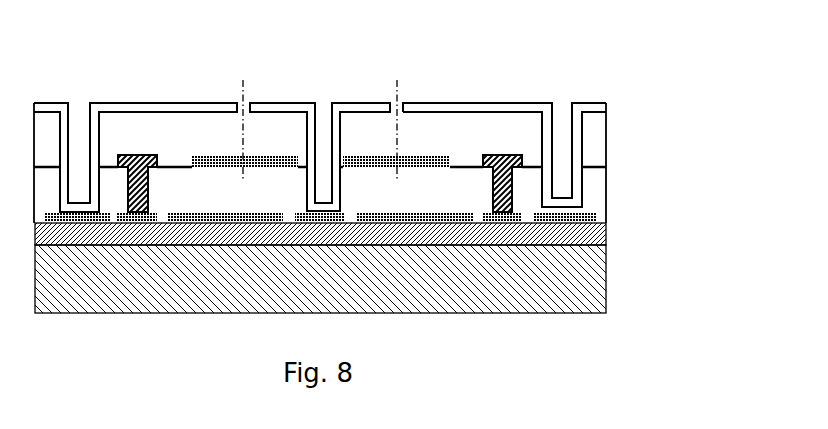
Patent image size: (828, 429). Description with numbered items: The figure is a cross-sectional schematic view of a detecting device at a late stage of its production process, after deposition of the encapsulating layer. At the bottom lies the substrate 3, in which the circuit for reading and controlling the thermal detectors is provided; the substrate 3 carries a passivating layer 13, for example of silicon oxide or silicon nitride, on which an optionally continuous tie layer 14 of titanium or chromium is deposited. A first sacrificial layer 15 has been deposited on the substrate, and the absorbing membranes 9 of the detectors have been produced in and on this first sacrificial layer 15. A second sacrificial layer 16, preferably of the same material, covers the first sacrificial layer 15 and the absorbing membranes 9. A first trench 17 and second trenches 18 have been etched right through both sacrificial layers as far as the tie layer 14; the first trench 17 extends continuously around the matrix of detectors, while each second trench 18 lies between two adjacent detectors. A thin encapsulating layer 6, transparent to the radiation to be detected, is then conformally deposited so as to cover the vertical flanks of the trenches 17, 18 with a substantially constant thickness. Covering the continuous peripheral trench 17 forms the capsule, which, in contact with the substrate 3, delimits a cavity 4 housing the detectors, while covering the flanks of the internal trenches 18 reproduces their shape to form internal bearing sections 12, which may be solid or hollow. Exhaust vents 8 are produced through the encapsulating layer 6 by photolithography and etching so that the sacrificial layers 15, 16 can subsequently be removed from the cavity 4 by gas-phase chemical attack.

The substrate 3 is at (612, 277).
The cavity 4 is at (472, 133).
The encapsulating layer 6 is at (467, 105).
The exhaust vent 8 is at (243, 97).
The absorbing membrane 9 is at (218, 154).
The internal bearing section 12 is at (306, 140).
The passivating layer 13 is at (606, 233).
The tie layer 14 is at (592, 218).
The first sacrificial layer 15 is at (606, 193).
The second sacrificial layer 16 is at (606, 140).
The first trench 17 is at (80, 98).
The second trench 18 is at (320, 98).